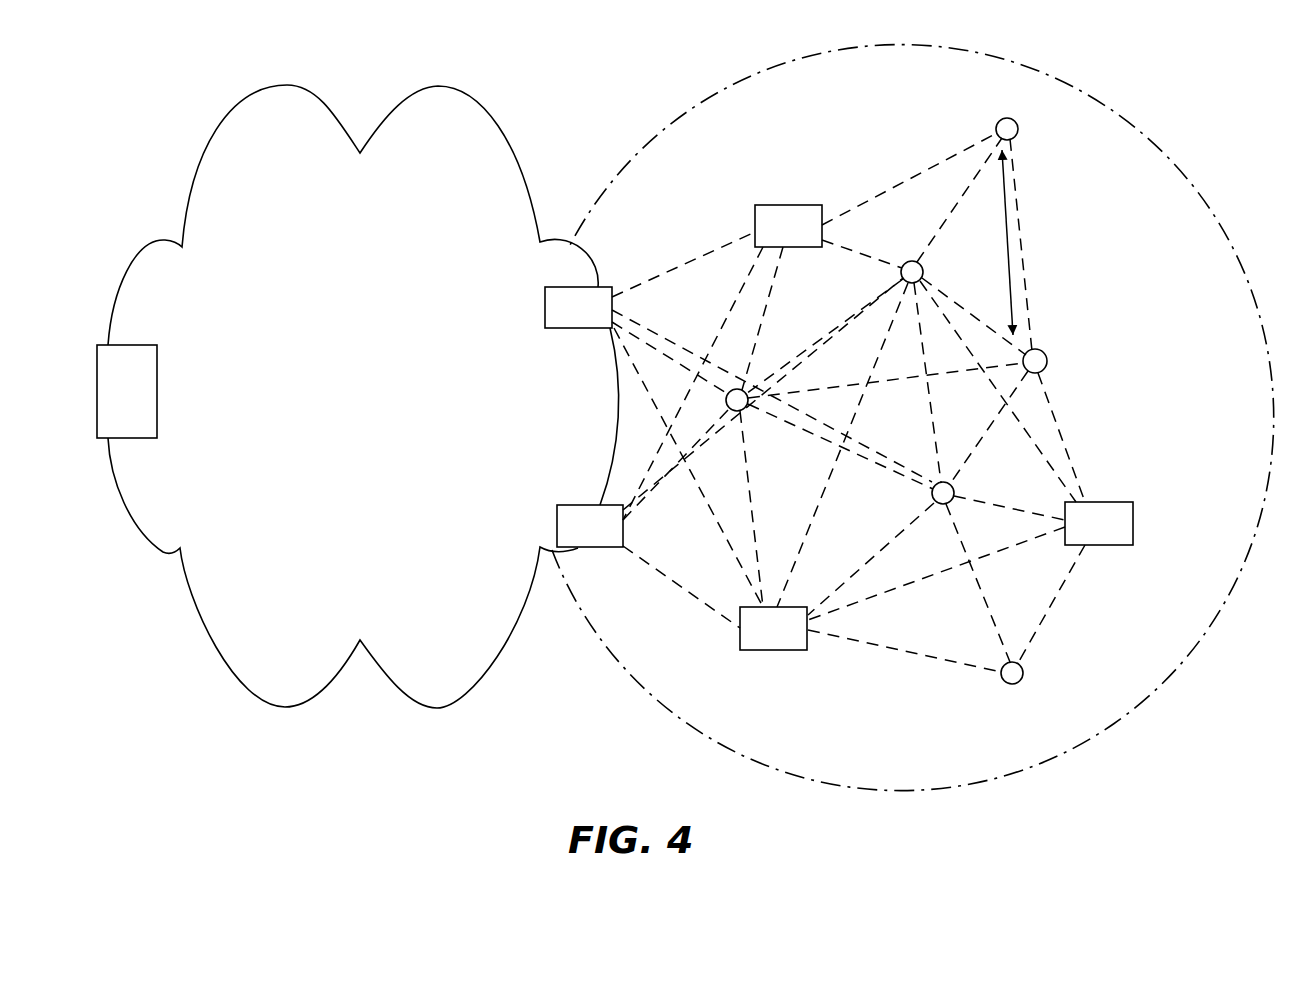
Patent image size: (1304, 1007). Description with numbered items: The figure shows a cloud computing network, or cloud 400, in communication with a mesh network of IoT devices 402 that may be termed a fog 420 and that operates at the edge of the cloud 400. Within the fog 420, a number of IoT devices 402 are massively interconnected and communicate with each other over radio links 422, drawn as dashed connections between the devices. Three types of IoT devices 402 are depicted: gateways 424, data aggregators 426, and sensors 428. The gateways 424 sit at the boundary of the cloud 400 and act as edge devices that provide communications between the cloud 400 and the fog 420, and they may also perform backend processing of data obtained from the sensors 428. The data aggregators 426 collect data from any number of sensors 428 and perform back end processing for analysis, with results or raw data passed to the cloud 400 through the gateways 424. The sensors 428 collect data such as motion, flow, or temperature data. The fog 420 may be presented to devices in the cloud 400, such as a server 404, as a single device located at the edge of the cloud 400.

The cloud 400 is at (448, 708).
The IoT device 402 is at (788, 205).
The server 404 is at (140, 345).
The fog 420 is at (1092, 739).
The radio link 422 is at (909, 183).
The gateway 424 is at (596, 287).
The data aggregator 426 is at (772, 200).
The sensor 428 is at (1003, 258).